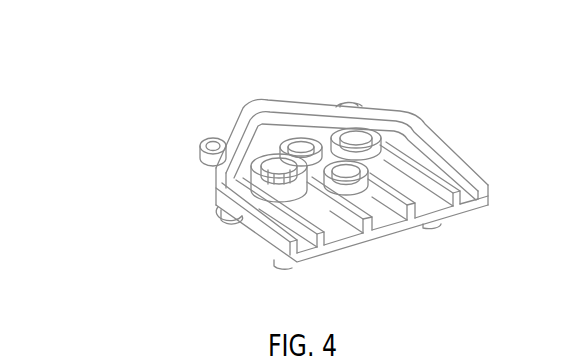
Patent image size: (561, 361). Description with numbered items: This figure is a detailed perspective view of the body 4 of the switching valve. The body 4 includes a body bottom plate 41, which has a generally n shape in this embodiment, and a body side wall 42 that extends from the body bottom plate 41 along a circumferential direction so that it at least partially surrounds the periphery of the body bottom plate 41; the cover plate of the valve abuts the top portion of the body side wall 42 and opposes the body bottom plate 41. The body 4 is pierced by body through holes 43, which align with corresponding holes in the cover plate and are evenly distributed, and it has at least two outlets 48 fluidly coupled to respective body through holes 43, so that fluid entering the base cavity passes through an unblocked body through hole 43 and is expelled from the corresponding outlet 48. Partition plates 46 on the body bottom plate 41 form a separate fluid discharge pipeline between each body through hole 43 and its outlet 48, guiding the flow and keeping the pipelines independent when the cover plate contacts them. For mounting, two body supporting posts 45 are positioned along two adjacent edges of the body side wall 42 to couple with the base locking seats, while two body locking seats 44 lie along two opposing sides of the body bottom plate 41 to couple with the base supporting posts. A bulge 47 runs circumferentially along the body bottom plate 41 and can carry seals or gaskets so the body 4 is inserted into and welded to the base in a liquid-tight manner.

The body 4 is at (103, 92).
The body bottom plate 41 is at (289, 128).
The body side wall 42 is at (264, 101).
The body through hole 43 is at (307, 142).
The body locking seat 44 is at (205, 140).
The body supporting post 45 is at (279, 264).
The partition plate 46 is at (373, 226).
The bulge 47 is at (221, 210).
The outlet 48 is at (333, 228).